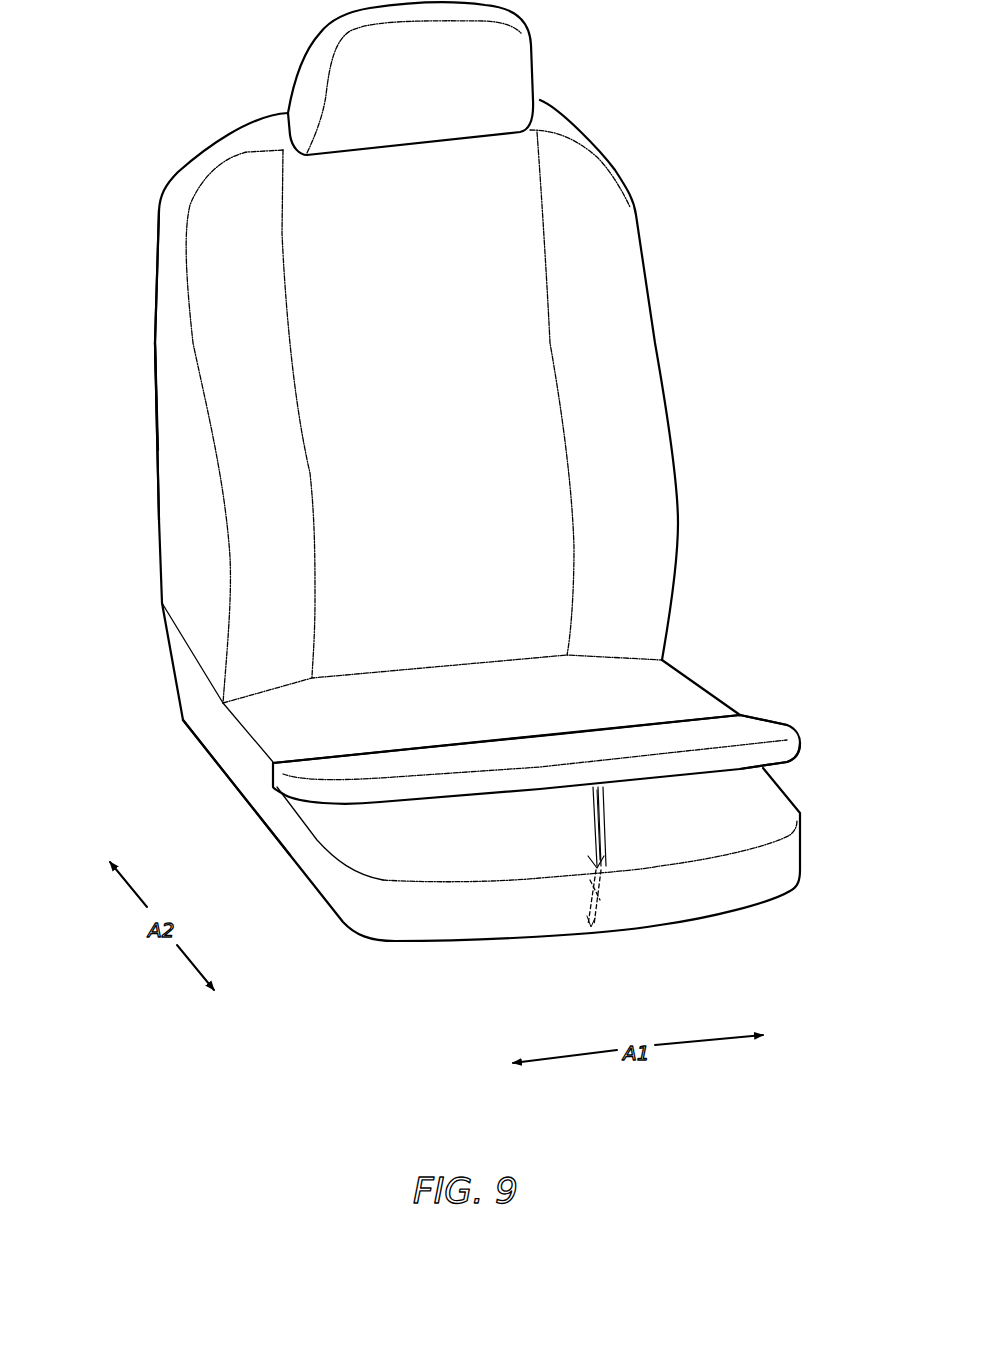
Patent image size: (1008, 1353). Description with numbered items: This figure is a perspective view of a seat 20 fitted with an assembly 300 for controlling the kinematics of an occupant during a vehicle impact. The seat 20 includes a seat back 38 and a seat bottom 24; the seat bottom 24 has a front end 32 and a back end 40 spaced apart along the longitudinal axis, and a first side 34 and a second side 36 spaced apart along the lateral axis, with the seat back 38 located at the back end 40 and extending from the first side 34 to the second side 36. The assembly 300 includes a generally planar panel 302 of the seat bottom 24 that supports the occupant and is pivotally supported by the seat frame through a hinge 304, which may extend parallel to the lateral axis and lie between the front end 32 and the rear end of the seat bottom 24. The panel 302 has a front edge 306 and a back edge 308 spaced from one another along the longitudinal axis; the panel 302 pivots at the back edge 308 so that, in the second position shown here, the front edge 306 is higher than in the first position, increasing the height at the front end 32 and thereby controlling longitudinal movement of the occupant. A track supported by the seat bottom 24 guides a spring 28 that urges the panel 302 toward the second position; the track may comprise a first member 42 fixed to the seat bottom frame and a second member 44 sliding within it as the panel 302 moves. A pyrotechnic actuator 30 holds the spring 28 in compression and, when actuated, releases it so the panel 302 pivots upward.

The seat 20 is at (107, 435).
The seat bottom 24 is at (442, 683).
The spring 28 is at (600, 820).
The pyrotechnic actuator 30 is at (590, 927).
The front end 32 is at (472, 913).
The first side 34 is at (247, 783).
The second side 36 is at (710, 684).
The seat back 38 is at (172, 312).
The back end 40 is at (173, 673).
The first member 42 is at (603, 897).
The second member 44 is at (584, 812).
The assembly 300 is at (133, 745).
The panel 302 is at (645, 740).
The hinge 304 is at (518, 737).
The front edge 306 is at (700, 758).
The back edge 308 is at (397, 750).